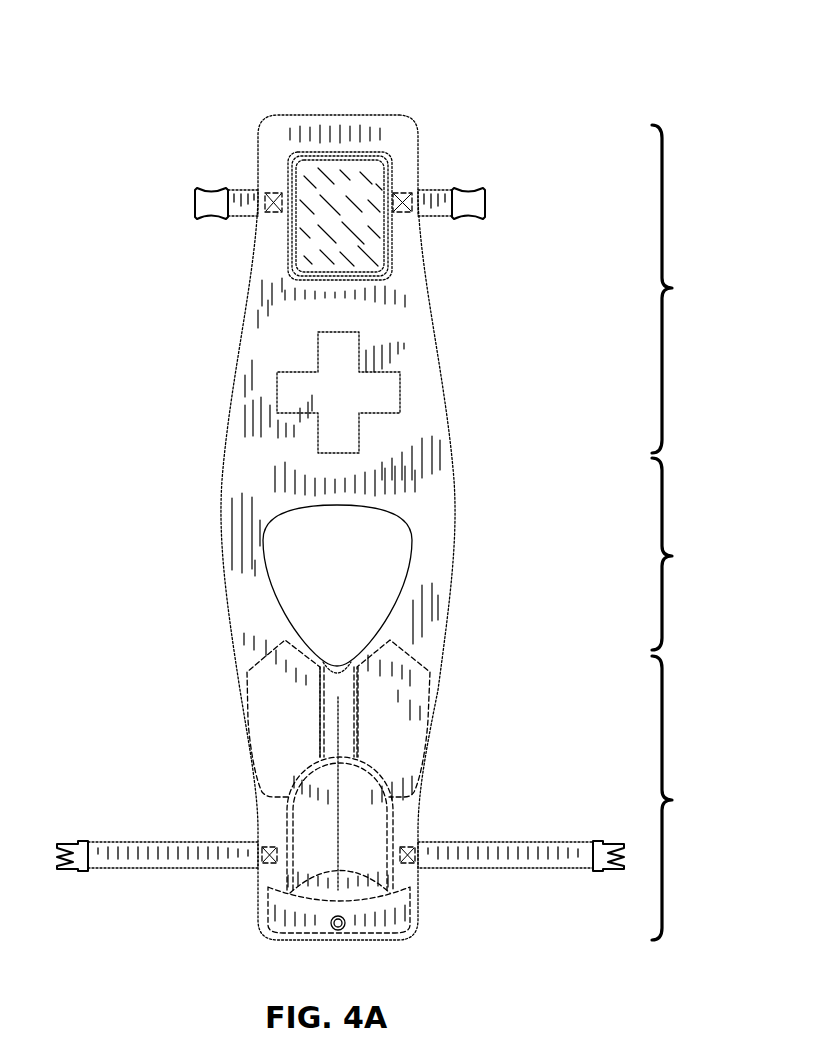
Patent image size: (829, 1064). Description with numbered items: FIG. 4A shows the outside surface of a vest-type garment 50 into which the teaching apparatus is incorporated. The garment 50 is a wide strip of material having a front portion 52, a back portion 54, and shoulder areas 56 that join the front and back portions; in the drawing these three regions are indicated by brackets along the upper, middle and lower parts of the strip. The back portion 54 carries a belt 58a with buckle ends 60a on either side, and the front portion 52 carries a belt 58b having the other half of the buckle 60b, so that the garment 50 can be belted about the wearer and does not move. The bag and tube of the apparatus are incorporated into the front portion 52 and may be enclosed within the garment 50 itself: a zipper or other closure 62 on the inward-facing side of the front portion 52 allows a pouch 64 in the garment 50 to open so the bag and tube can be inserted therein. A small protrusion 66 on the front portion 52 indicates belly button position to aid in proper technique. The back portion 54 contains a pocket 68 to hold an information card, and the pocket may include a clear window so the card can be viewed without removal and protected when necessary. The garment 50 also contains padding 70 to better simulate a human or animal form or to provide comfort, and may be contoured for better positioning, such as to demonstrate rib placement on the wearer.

The garment 50 is at (142, 66).
The front portion 52 is at (681, 798).
The back portion 54 is at (681, 289).
The shoulder areas 56 is at (681, 554).
The belt 58a is at (242, 208).
The belt 58b is at (218, 856).
The buckle ends 60a is at (208, 191).
The buckle 60b is at (85, 841).
The closure 62 is at (330, 833).
The pouch 64 is at (381, 827).
The protrusion 66 is at (336, 930).
The pocket 68 is at (300, 180).
The padding 70 is at (273, 702).